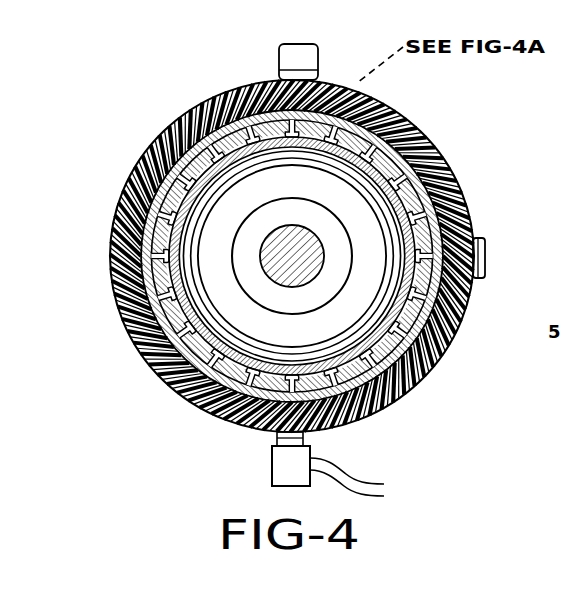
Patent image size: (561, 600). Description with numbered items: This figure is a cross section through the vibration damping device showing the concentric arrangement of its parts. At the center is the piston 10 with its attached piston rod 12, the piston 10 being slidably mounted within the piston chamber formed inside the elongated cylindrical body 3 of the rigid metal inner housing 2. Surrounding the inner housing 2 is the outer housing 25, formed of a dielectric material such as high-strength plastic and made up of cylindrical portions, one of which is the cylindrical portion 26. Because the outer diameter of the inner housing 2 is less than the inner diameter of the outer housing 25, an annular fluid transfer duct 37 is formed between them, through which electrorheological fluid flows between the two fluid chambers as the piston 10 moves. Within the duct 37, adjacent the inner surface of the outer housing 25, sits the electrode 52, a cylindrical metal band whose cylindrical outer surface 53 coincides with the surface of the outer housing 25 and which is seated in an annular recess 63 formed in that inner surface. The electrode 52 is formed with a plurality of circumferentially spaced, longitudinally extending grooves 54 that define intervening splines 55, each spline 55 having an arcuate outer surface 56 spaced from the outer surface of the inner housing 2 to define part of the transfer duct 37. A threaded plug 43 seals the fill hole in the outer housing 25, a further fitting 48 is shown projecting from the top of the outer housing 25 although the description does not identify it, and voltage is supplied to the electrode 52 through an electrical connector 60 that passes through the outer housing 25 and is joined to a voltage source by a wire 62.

The inner housing 2 is at (367, 388).
The cylindrical body 3 is at (243, 150).
The piston 10 is at (298, 268).
The piston rod 12 is at (350, 364).
The outer housing 25 is at (410, 103).
The cylindrical portion 26 is at (432, 155).
The annular fluid transfer duct 37 is at (368, 292).
The threaded plug 43 is at (486, 247).
The terminal connector 48 is at (308, 54).
The electrode 52 is at (176, 162).
The cylindrical outer surface 53 is at (262, 120).
The grooves 54 is at (178, 196).
The splines 55 is at (163, 208).
The arcuate outer surface 56 is at (452, 186).
The electrical connector 60 is at (282, 463).
The wire 62 is at (348, 462).
The annular recess 63 is at (150, 232).